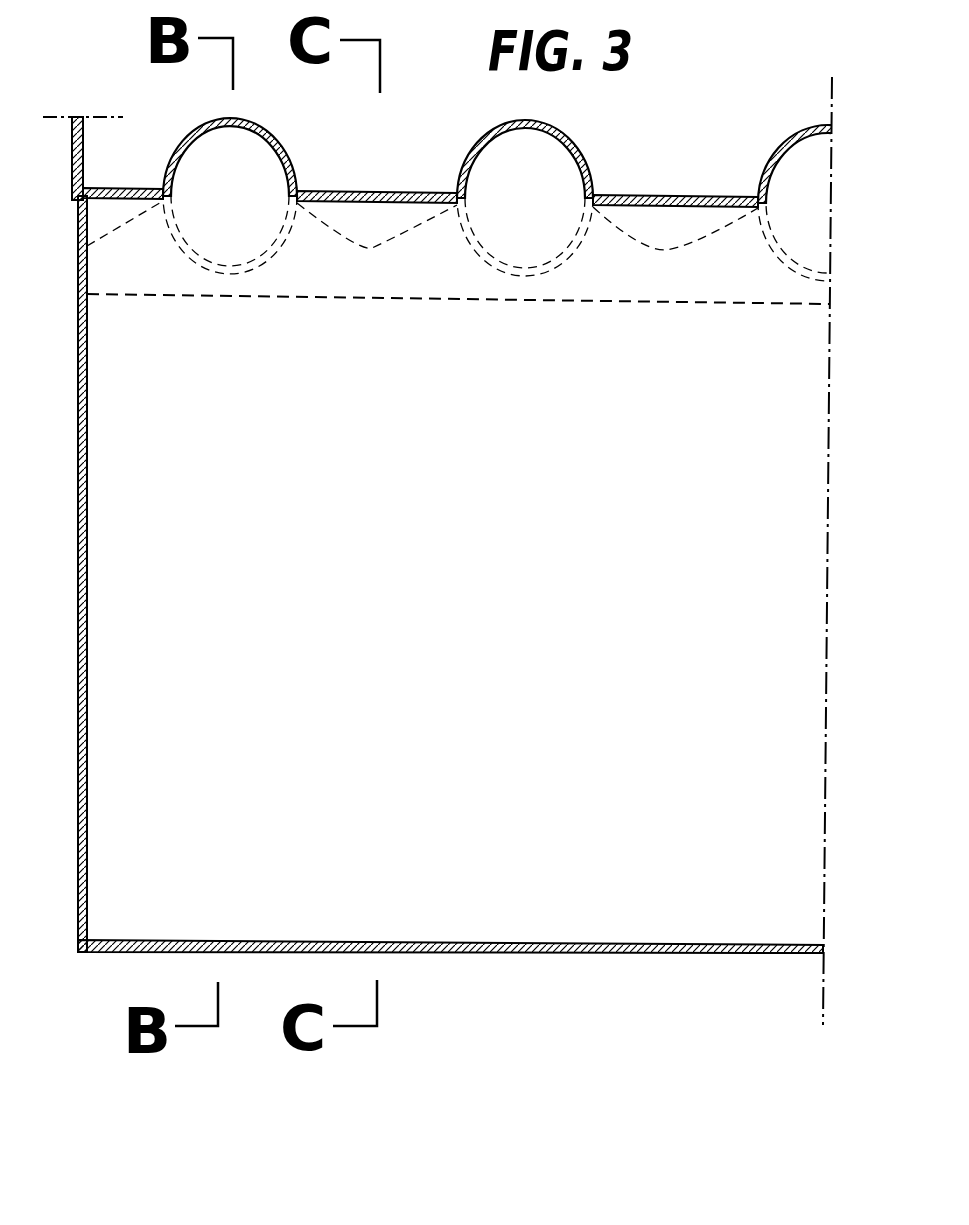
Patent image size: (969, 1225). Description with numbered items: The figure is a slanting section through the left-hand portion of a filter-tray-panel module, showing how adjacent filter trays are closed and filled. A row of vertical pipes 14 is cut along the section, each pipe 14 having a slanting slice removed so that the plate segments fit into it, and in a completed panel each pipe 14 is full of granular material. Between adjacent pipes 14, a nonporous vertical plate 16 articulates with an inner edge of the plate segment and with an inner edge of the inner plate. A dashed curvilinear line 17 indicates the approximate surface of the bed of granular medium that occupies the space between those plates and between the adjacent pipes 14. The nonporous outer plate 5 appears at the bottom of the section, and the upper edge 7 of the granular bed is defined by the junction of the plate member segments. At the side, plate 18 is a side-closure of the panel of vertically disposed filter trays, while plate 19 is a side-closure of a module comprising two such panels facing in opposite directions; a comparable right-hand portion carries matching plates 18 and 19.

The nonporous plate 5 is at (533, 952).
The upper edge of bed 7 is at (478, 300).
The vertical pipe 14 is at (580, 153).
The nonporous vertical plate 16 is at (343, 192).
The dashed curvilinear line 17 is at (404, 232).
The side-closure plate 18 is at (90, 542).
The side-closure plate 19 is at (83, 155).